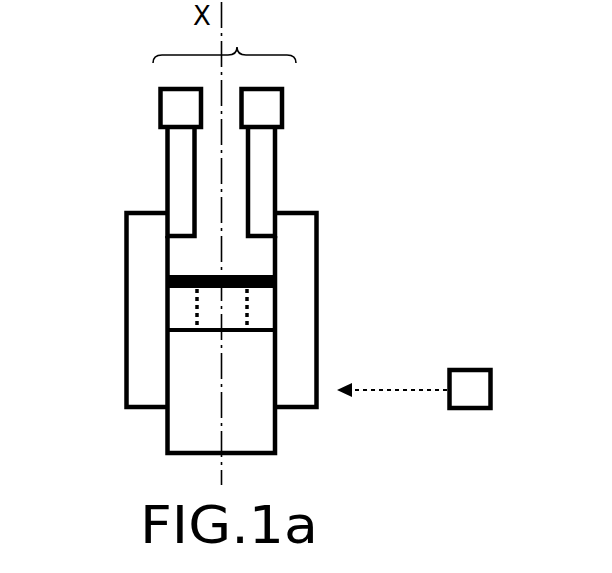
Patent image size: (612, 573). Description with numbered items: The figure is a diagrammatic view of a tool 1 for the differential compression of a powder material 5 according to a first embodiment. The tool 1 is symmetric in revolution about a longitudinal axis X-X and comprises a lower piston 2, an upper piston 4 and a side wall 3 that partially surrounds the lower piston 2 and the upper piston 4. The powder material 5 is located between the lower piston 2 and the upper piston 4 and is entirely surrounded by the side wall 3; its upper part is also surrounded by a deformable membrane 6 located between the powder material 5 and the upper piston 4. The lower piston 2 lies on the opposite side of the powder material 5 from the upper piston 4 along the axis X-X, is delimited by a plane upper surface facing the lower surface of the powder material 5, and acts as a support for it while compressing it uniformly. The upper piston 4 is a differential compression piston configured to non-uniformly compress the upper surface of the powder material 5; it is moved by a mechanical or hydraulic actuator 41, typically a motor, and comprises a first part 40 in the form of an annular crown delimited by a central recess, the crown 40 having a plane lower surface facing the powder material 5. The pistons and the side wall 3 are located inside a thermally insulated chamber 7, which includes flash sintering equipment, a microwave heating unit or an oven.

The tool 1 is at (380, 168).
The lower piston 2 is at (187, 432).
The side wall 3 is at (140, 264).
The upper piston 4 is at (224, 41).
The first part 40 is at (178, 154).
The actuator 41 is at (172, 110).
The powder material 5 is at (197, 318).
The deformable membrane 6 is at (277, 285).
The thermally insulated chamber 7 is at (470, 385).